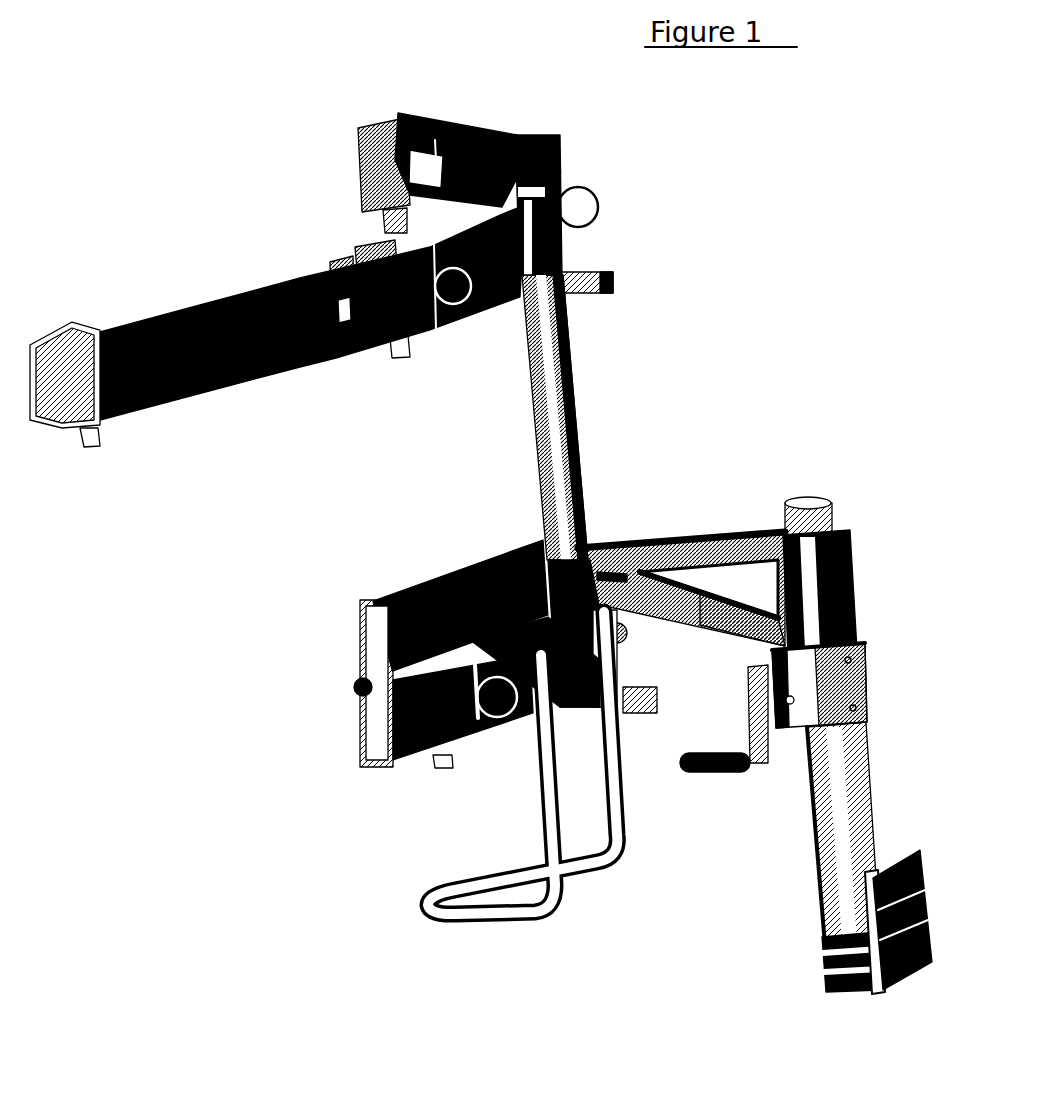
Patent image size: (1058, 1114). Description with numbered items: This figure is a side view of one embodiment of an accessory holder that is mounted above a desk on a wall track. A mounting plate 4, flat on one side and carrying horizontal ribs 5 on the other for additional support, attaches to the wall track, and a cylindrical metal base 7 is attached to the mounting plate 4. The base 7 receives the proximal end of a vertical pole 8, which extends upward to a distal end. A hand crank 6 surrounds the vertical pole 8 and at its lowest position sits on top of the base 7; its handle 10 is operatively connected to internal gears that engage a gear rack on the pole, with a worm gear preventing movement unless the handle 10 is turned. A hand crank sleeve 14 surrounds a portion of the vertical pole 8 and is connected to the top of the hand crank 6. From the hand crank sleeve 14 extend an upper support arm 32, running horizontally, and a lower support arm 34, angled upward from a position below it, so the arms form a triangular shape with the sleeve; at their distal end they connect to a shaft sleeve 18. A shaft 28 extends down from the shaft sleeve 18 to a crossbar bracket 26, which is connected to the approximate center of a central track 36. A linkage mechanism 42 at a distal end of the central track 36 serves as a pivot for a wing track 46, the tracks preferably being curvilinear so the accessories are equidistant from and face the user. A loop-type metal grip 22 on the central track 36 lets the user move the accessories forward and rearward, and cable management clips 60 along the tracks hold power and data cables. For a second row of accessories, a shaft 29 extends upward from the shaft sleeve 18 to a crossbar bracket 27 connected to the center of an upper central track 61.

The mounting plate 4 is at (880, 985).
The ribs 5 is at (922, 893).
The hand crank 6 is at (835, 681).
The base 7 is at (865, 978).
The vertical pole 8 is at (828, 787).
The handle 10 is at (700, 770).
The hand crank sleeve 14 is at (848, 572).
The shaft sleeve 18 is at (590, 556).
The grip 22 is at (510, 905).
The crossbar bracket 26 is at (612, 715).
The crossbar bracket 27 is at (560, 245).
The shaft 28 is at (605, 622).
The shaft 29 is at (558, 362).
The upper support arm 32 is at (735, 542).
The lower support arm 34 is at (730, 620).
The central track 36 is at (425, 758).
The linkage mechanism 42 is at (365, 692).
The wing track 46 is at (438, 597).
The cable management clips 60 is at (285, 375).
The upper central track 61 is at (498, 310).